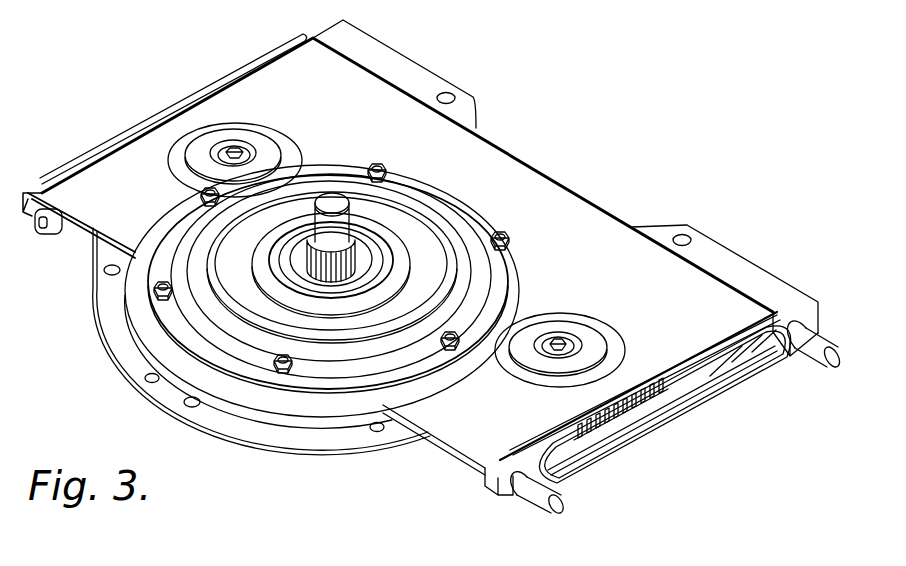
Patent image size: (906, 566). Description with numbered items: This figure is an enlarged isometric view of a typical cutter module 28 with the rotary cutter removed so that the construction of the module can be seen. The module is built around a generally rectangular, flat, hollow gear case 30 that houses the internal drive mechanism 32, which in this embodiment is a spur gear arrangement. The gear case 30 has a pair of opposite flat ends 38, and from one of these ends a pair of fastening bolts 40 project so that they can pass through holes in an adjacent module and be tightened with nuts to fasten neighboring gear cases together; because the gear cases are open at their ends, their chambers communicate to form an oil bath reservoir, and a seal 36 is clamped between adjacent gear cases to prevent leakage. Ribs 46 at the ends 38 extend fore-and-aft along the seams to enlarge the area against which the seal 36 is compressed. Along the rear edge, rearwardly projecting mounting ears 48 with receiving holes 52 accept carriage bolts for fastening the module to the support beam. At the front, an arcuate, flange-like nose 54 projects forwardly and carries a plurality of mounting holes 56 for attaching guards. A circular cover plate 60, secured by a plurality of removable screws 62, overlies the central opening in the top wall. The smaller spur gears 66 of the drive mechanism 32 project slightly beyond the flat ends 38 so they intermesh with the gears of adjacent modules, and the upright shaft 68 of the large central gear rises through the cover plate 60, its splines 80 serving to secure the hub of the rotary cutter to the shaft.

The cutter module 28 is at (562, 115).
The gear case 30 is at (577, 189).
The drive mechanism 32 is at (658, 424).
The seal 36 is at (713, 400).
The flat ends 38 is at (26, 189).
The fastening bolts 40 is at (822, 352).
The ribs 46 is at (233, 80).
The mounting ears 48 is at (388, 60).
The receiving holes 52 is at (447, 97).
The nose 54 is at (233, 413).
The mounting holes 56 is at (104, 270).
The cover plate 60 is at (505, 288).
The removable screws 62 is at (509, 240).
The smaller spur gears 66 is at (613, 433).
The upright shaft 68 is at (333, 200).
The splines 80 is at (355, 278).